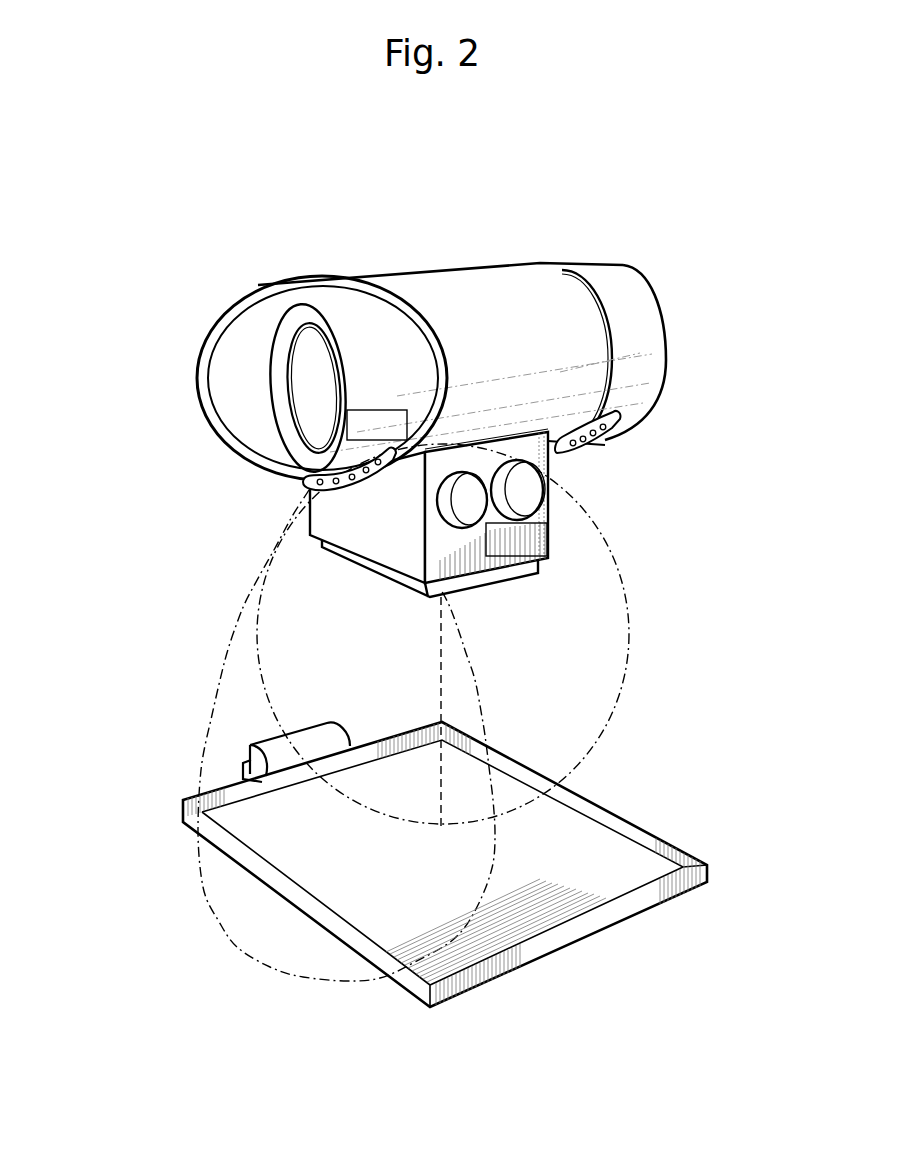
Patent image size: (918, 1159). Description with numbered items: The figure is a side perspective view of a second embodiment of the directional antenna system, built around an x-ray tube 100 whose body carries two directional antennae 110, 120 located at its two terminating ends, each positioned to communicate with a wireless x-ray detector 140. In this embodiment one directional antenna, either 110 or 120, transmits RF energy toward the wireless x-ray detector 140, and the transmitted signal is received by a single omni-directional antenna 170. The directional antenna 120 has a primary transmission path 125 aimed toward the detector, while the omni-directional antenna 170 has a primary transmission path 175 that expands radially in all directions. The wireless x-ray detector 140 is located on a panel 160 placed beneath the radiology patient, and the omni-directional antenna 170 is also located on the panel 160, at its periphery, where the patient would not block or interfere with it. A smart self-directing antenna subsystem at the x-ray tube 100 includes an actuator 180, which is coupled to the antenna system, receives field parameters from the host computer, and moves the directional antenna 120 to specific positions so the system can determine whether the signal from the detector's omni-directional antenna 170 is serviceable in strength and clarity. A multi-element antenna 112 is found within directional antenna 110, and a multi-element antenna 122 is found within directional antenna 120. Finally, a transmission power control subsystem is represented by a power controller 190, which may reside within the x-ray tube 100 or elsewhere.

The x-ray tube 100 is at (529, 354).
The directional antenna 110 is at (620, 430).
The multi-element antenna 112 is at (597, 447).
The directional antenna 120 is at (330, 477).
The multi-element antenna 122 is at (308, 486).
The primary transmission path 125 is at (205, 672).
The wireless x-ray detector 140 is at (603, 867).
The panel 160 is at (683, 846).
The omni-directional antenna 170 is at (250, 755).
The primary transmission path 175 is at (620, 651).
The actuator 180 is at (372, 432).
The power controller 190 is at (520, 540).